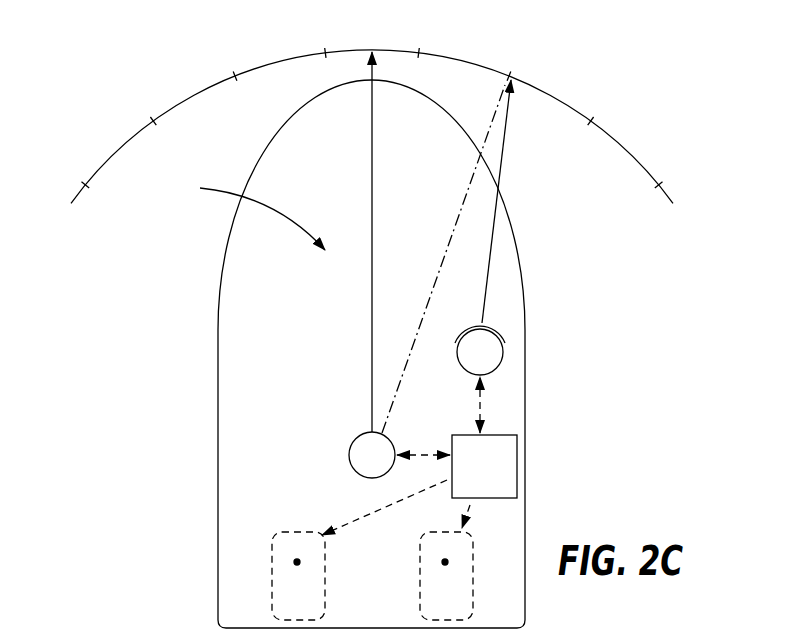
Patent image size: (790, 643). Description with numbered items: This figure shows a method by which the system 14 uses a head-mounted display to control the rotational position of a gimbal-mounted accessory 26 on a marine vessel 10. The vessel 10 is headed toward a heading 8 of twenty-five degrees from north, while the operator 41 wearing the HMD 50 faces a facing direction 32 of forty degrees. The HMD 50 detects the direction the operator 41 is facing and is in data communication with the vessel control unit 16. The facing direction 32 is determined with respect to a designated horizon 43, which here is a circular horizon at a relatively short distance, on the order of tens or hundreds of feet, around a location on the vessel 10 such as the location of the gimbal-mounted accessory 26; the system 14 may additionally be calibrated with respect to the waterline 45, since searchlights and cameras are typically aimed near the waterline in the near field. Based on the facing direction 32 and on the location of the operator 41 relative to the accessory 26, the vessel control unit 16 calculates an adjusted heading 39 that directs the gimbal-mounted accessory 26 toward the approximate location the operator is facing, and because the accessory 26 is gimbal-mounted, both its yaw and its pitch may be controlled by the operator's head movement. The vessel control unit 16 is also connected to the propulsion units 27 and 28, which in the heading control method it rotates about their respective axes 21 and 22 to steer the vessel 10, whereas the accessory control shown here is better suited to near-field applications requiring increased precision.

The heading 8 is at (370, 230).
The marine vessel 10 is at (218, 357).
The system 14 is at (251, 210).
The vessel control unit 16 is at (517, 458).
The axis 21 is at (297, 563).
The axis 22 is at (445, 563).
The gimbal-mounted accessory 26 is at (348, 452).
The propulsion unit 27 is at (332, 575).
The propulsion unit 28 is at (479, 575).
The facing direction 32 is at (497, 230).
The adjusted heading 39 is at (445, 250).
The operator 41 is at (493, 360).
The designated horizon 43 is at (649, 127).
The waterline 45 is at (513, 80).
The head-mounted display 50 is at (500, 333).